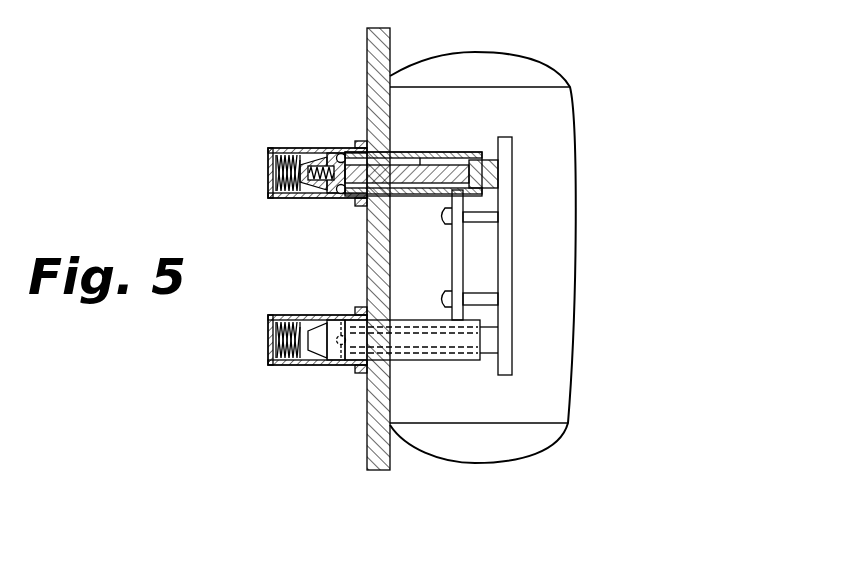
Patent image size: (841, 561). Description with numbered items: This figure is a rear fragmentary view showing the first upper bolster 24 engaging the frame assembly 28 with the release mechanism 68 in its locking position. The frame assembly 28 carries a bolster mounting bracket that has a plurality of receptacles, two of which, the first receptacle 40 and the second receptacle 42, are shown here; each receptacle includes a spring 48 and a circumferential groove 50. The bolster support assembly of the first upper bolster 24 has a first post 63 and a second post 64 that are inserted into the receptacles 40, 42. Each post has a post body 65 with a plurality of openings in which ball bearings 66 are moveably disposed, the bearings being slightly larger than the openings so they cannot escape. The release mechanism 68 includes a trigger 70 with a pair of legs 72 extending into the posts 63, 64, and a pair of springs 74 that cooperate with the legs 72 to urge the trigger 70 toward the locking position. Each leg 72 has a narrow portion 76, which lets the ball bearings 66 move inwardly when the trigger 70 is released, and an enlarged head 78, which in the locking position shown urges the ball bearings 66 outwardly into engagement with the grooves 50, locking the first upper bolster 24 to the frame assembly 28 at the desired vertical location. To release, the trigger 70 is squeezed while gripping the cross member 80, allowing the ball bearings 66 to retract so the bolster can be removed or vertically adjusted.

The first upper bolster 24 is at (572, 110).
The frame assembly 28 is at (333, 53).
The first receptacle 40 is at (320, 315).
The second receptacle 42 is at (275, 148).
The spring 48 is at (285, 366).
The circumferential groove 50 is at (345, 364).
The first post 63 is at (415, 365).
The second post 64 is at (455, 164).
The post body 65 is at (401, 150).
The ball bearings 66 is at (340, 152).
The release mechanism 68 is at (518, 217).
The trigger 70 is at (512, 253).
The legs 72 is at (408, 155).
The springs 74 is at (328, 190).
The narrow portion 76 is at (362, 150).
The enlarged head 78 is at (308, 150).
The cross member 80 is at (463, 252).